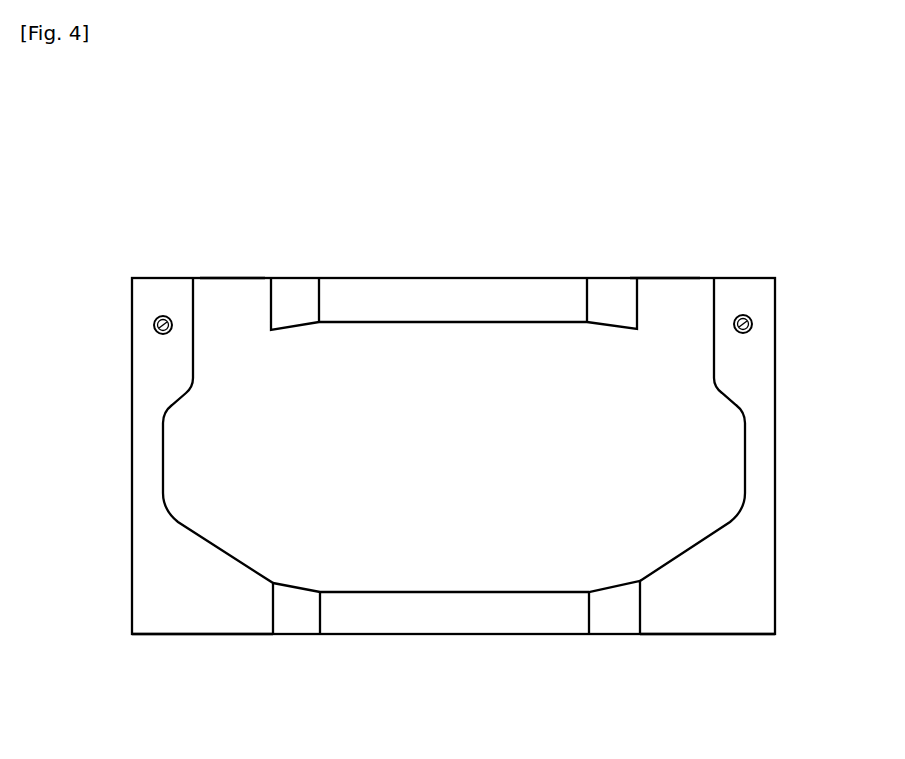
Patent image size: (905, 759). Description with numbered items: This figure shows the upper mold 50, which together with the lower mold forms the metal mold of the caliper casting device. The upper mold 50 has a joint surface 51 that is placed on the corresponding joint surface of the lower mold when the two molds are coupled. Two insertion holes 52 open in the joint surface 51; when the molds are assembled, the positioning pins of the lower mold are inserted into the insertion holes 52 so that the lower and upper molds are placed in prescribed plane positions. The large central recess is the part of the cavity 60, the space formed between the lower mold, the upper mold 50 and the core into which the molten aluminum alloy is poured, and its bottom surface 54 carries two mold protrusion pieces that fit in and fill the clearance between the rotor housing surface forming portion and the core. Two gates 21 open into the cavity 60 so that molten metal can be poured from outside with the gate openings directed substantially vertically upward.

The upper mold 50 is at (750, 198).
The gate 21 is at (238, 267).
The insertion hole 52 is at (154, 322).
The cavity 60 is at (515, 456).
The bottom surface 54 is at (695, 453).
The joint surface 51 is at (185, 617).